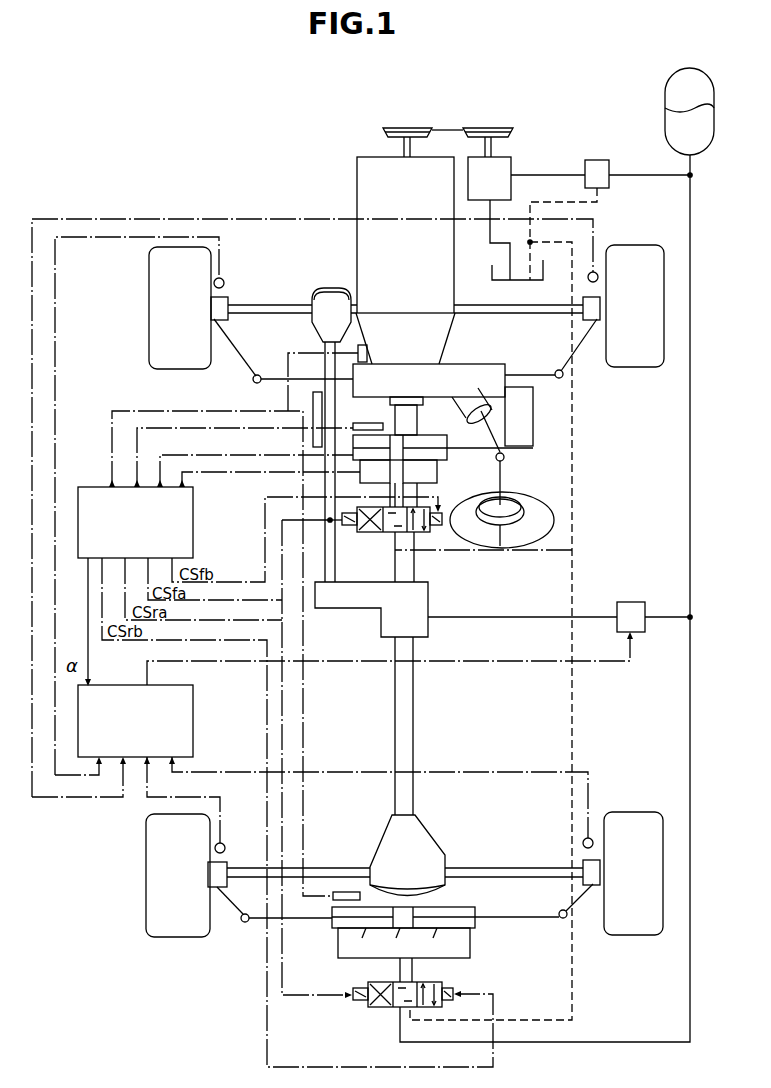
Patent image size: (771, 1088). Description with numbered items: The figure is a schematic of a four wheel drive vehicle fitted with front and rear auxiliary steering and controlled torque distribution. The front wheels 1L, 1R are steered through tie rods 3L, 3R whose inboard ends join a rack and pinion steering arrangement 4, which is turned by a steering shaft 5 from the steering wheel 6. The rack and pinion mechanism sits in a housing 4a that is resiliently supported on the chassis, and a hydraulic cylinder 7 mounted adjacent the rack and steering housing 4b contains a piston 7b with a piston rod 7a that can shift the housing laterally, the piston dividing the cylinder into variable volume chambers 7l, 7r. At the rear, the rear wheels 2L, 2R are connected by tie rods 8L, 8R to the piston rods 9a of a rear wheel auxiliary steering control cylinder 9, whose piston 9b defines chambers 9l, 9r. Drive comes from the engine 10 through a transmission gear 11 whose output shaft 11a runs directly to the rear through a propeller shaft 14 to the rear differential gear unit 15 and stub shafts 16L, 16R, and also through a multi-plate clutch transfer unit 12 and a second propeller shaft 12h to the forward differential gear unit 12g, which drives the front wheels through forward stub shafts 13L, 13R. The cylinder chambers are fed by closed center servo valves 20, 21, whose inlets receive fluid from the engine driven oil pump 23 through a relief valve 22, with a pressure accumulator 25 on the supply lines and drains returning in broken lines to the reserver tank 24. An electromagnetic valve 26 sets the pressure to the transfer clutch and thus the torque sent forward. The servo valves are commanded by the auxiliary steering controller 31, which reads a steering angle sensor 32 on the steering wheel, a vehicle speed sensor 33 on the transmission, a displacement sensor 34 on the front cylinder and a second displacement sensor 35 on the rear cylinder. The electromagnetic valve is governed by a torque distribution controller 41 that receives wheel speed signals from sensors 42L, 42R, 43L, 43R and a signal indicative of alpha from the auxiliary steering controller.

The front wheel 1L is at (158, 368).
The front wheel 1R is at (640, 367).
The rear wheel 2L is at (183, 933).
The rear wheel 2R is at (642, 927).
The tie rod 3L is at (233, 346).
The tie rod 3R is at (578, 348).
The rack and pinion steering arrangement 4 is at (447, 369).
The housing 4a is at (521, 375).
The rack and steering housing 4b is at (483, 370).
The steering shaft 5 is at (506, 466).
The steering wheel 6 is at (555, 520).
The hydraulic cylinder 7 is at (420, 433).
The piston rod 7a is at (505, 438).
The piston 7b is at (447, 453).
The variable volume chamber 7l is at (352, 453).
The variable volume chamber 7r is at (440, 445).
The tie rod 8L is at (229, 900).
The tie rod 8R is at (579, 898).
The rear wheel auxiliary steering control cylinder 9 is at (470, 907).
The piston rods 9a is at (508, 918).
The piston 9b is at (405, 944).
The variable volume chamber 9l is at (355, 944).
The variable volume chamber 9r is at (446, 944).
The engine 10 is at (357, 168).
The transmission gear 11 is at (444, 338).
The output shaft 11a is at (414, 572).
The multi-plate type clutch transfer unit 12 is at (428, 600).
The forward differential gear unit 12g is at (332, 292).
The second propeller shaft 12h is at (336, 557).
The forward stub shaft 13L is at (300, 300).
The forward stub shaft 13R is at (515, 313).
The propeller shaft 14 is at (413, 720).
The rear differential gear unit 15 is at (430, 847).
The stub shaft 16L is at (345, 868).
The stub shaft 16R is at (508, 866).
The servo valve 20 is at (355, 507).
The servo valve 21 is at (373, 1012).
The relief valve 22 is at (597, 160).
The oil pump 23 is at (513, 170).
The reserver tank 24 is at (490, 276).
The pressure accumulator 25 is at (665, 98).
The electromagnetic valve 26 is at (645, 602).
The auxiliary steering controller 31 is at (193, 545).
The steering angle sensor 32 is at (516, 491).
The vehicle speed sensor 33 is at (358, 352).
The displacement sensor 34 is at (360, 423).
The second displacement sensor 35 is at (352, 892).
The torque distribution controller 41 is at (193, 745).
The forward wheel speed sensor 42L is at (223, 279).
The forward wheel speed sensor 42R is at (595, 272).
The rear wheel speed sensor 43L is at (223, 843).
The rear wheel speed sensor 43R is at (591, 838).